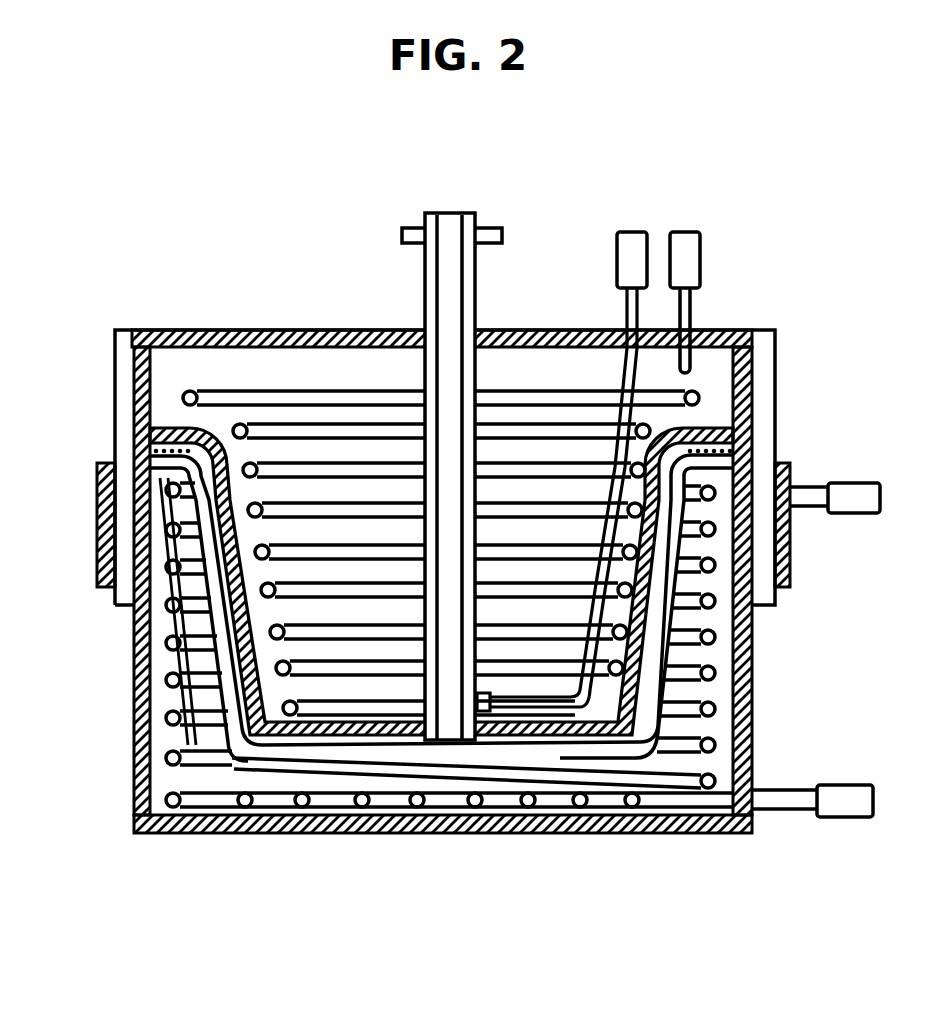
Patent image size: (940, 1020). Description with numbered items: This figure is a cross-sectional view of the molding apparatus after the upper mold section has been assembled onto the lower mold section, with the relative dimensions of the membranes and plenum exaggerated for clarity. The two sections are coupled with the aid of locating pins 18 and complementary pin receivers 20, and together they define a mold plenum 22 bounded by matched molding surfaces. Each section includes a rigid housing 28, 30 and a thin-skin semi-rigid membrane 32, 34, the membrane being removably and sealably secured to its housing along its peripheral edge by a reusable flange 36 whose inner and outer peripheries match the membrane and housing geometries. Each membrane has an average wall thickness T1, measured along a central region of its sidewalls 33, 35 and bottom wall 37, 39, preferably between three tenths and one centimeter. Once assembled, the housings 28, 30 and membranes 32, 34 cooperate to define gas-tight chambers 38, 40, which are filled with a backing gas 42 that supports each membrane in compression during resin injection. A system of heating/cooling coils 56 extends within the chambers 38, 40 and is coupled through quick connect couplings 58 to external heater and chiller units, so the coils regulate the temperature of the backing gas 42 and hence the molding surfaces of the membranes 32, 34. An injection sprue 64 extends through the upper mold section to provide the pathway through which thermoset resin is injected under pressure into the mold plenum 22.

The locating pins 18 is at (762, 592).
The pin receivers 20 is at (772, 535).
The mold plenum 22 is at (152, 666).
The rigid housing 28 is at (166, 327).
The rigid housing 30 is at (128, 829).
The semi-rigid membrane 32 is at (648, 637).
The sidewall 33 is at (154, 600).
The semi-rigid membrane 34 is at (668, 718).
The sidewall 35 is at (154, 642).
The flange 36 is at (144, 445).
The bottom wall 37 is at (583, 742).
The gas-tight chamber 38 is at (190, 382).
The bottom wall 39 is at (522, 780).
The gas-tight chamber 40 is at (164, 753).
The backing gas 42 is at (720, 377).
The heating/cooling coils 56 is at (359, 388).
The quick connect couplings 58 is at (630, 250).
The injection sprue 64 is at (481, 216).
The wall thickness T1 is at (243, 498).